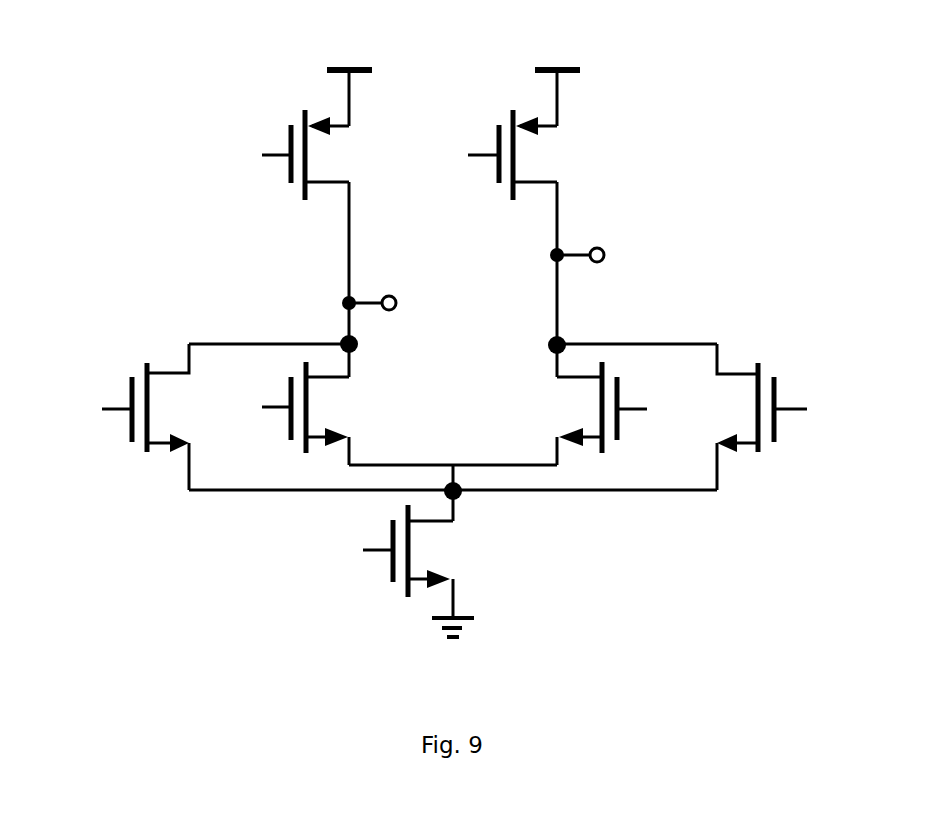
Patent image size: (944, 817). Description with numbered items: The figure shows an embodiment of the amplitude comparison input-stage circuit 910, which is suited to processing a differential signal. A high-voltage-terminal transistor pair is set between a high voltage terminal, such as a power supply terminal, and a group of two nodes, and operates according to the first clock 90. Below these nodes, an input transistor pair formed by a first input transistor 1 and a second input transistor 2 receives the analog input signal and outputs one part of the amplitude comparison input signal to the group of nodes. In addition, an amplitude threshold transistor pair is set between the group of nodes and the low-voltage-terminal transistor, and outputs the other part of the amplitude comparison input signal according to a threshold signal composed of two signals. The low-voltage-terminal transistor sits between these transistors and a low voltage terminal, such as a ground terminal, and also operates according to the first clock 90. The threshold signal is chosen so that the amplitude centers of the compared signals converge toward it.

The amplitude comparison input-stage circuit 910 is at (75, 686).
The input transistor M1 1 is at (305, 413).
The input transistor M2 2 is at (602, 413).
The first clock CK90 90 is at (380, 561).